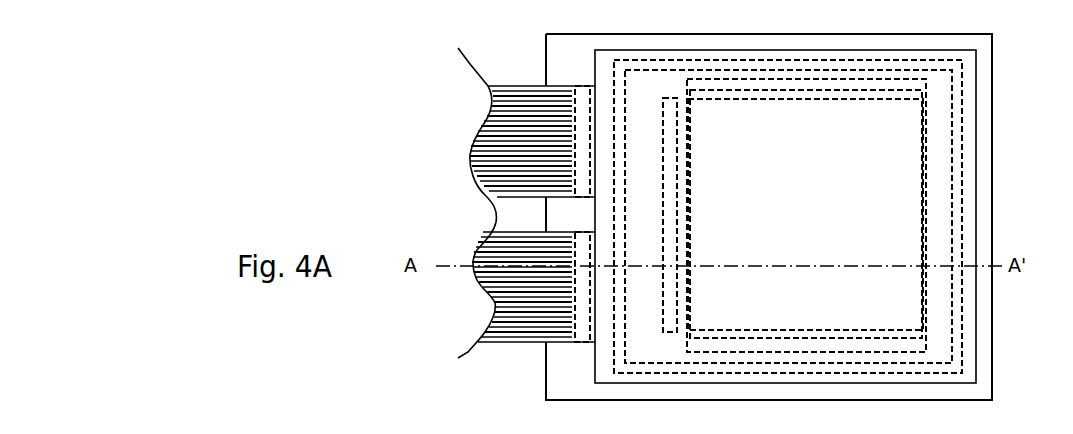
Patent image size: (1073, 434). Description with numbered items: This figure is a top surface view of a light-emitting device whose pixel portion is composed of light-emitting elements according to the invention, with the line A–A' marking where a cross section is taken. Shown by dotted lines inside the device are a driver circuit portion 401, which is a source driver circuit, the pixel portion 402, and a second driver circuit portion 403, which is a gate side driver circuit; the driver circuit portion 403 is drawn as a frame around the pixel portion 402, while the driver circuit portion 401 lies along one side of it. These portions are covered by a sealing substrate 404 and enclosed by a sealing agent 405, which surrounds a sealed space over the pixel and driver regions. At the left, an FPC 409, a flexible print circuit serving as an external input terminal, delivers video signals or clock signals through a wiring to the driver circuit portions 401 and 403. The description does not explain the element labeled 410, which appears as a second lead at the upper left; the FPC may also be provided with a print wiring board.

The driver circuit portion 401 is at (668, 322).
The pixel portion 402 is at (915, 310).
The driver circuit portion 403 is at (790, 85).
The sealing substrate 404 is at (613, 60).
The sealing agent 405 is at (955, 108).
The FPC 409 is at (508, 340).
The lead wiring 410 is at (550, 60).